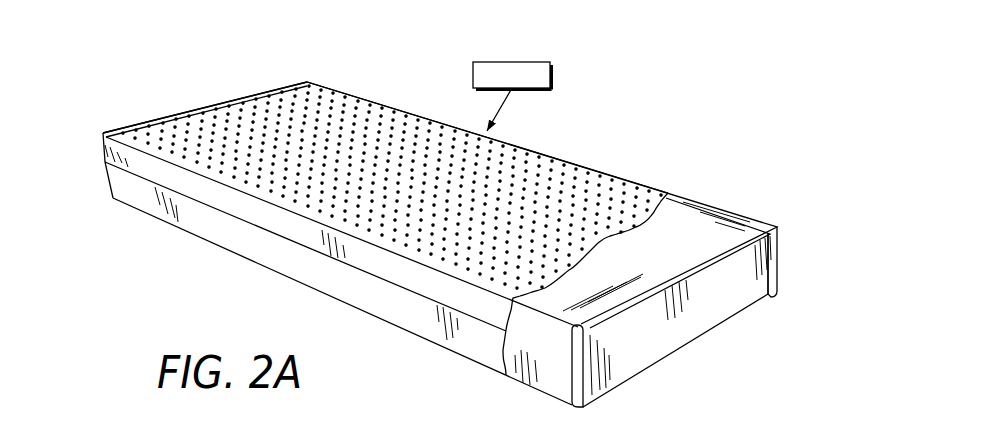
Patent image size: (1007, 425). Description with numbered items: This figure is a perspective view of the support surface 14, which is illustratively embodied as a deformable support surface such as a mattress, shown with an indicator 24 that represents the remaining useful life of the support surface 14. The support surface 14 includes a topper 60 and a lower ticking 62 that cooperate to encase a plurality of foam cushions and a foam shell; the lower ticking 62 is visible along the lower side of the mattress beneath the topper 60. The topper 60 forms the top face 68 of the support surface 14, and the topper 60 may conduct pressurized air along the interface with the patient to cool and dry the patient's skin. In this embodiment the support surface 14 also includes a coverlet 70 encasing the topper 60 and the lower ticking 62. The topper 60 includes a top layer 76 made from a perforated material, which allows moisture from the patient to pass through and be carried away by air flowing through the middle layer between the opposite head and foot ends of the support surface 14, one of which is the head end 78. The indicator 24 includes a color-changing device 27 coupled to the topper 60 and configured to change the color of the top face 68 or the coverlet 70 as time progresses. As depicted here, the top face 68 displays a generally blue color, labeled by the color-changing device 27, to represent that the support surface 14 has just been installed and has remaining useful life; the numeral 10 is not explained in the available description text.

The container assembly 10 is at (772, 120).
The support surface 14 is at (566, 153).
The indicator 24 is at (562, 42).
The color-changing device 27 is at (495, 62).
The topper 60 is at (643, 183).
The lower ticking 62 is at (110, 182).
The top face 68 is at (577, 197).
The coverlet 70 is at (735, 213).
The top layer 76 is at (415, 117).
The head end 78 is at (177, 112).